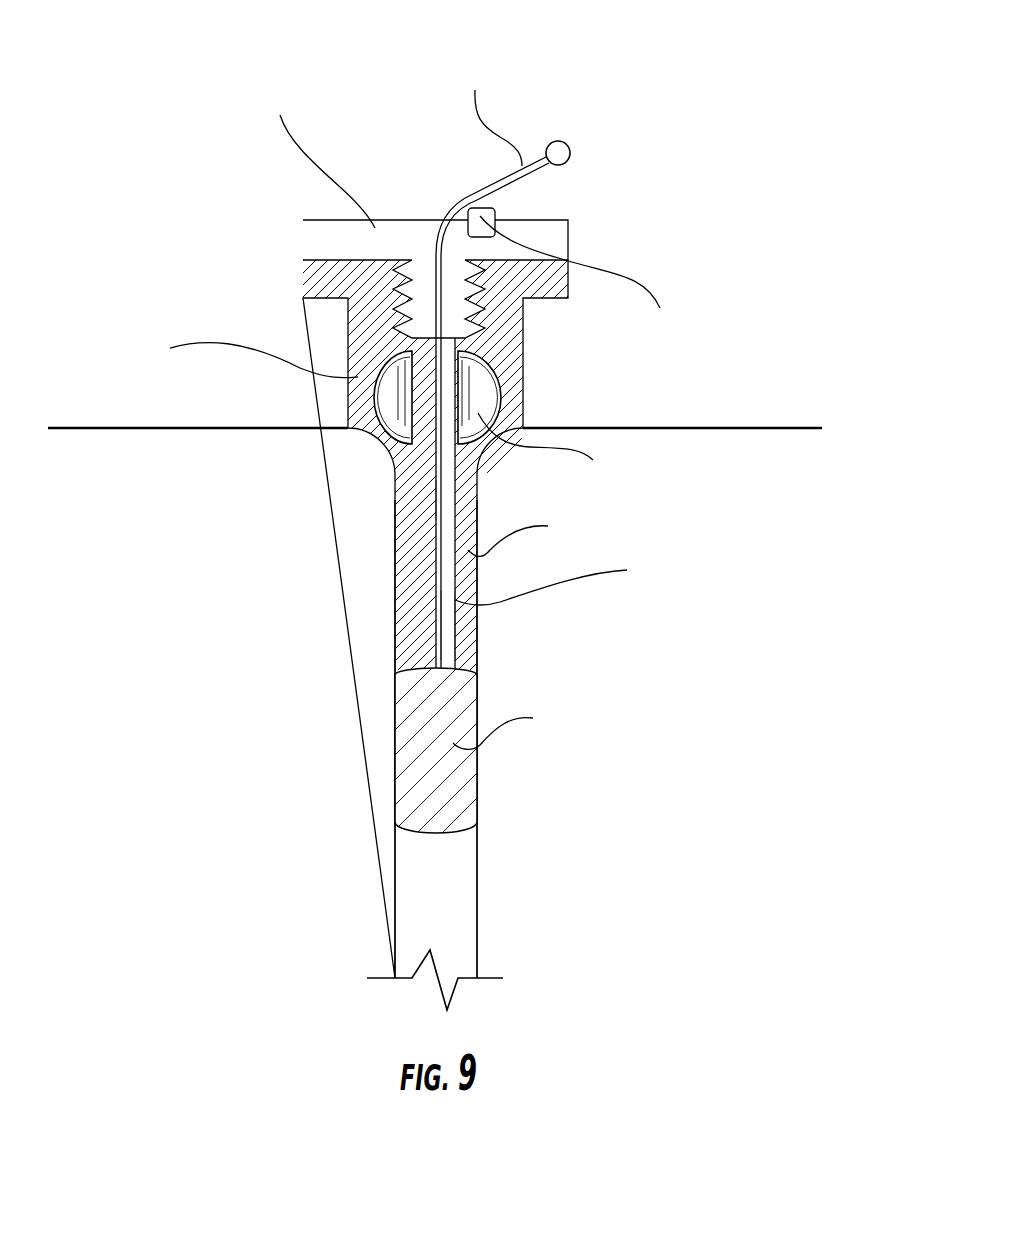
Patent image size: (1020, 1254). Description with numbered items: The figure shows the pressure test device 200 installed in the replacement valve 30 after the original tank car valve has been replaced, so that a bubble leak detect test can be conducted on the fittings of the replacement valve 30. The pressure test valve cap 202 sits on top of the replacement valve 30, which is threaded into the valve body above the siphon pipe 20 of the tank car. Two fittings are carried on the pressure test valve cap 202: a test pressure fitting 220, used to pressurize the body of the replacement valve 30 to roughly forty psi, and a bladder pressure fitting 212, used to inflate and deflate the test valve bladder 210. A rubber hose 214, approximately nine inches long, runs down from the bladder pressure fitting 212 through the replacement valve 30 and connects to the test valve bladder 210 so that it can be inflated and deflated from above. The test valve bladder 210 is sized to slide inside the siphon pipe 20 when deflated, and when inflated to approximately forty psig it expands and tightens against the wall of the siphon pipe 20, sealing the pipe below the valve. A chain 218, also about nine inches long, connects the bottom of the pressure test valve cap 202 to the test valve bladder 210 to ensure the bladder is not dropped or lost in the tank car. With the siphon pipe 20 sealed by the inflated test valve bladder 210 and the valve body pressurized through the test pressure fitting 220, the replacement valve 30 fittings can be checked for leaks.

The pressure test device 200 is at (182, 140).
The pressure test valve cap 202 is at (330, 237).
The test pressure fitting 220 is at (457, 203).
The bladder pressure fitting 212 is at (571, 153).
The replacement valve 30 is at (358, 312).
The rubber hose 214 is at (433, 497).
The chain 218 is at (455, 645).
The siphon pipe 20 is at (402, 584).
The test valve bladder 210 is at (455, 785).